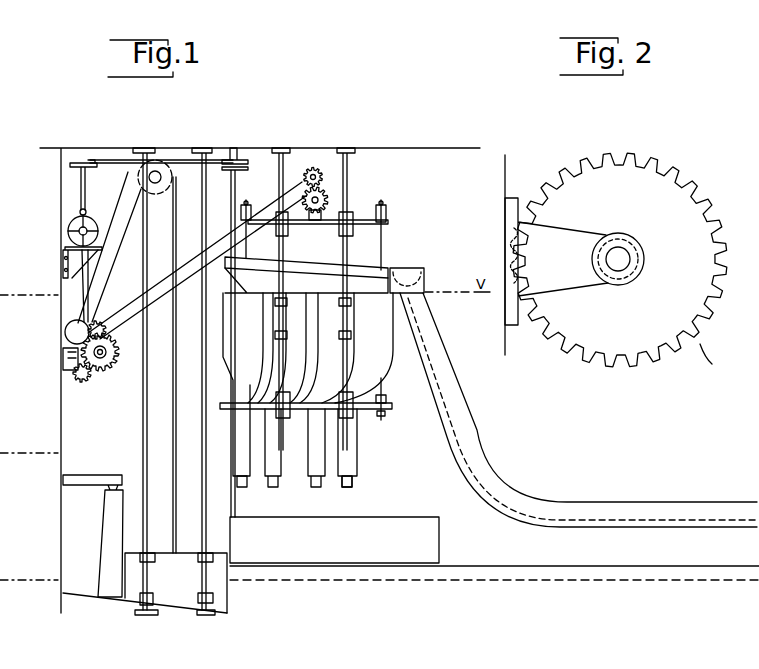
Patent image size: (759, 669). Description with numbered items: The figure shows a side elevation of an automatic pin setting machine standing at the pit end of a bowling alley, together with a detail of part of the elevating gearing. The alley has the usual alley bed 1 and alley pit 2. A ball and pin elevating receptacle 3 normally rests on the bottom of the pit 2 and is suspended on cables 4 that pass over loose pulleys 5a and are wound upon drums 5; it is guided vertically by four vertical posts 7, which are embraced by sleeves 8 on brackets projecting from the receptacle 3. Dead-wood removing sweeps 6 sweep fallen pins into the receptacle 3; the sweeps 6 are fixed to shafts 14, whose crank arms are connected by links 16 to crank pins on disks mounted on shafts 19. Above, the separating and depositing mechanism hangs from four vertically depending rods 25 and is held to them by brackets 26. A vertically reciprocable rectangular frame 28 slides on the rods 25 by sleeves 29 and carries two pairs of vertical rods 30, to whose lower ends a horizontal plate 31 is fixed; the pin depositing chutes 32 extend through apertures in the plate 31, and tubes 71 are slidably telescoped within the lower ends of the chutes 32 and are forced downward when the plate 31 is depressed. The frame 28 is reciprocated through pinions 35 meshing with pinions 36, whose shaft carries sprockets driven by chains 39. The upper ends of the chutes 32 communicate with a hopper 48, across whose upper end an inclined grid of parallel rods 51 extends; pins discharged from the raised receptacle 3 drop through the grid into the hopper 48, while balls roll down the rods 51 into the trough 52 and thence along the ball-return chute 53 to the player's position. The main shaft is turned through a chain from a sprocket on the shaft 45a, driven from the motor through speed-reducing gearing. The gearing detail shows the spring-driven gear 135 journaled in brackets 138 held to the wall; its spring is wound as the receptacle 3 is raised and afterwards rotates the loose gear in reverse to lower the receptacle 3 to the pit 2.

In FIG. 1, the alley bed 1 is at (584, 566).
In FIG. 1, the alley pit 2 is at (80, 588).
In FIG. 1, the ball and pin elevating receptacle 3 is at (182, 598).
In FIG. 1, the cables 4 is at (172, 440).
In FIG. 1, the drums 5 is at (70, 330).
In FIG. 1, the loose pulleys 5a is at (158, 168).
In FIG. 1, the dead-wood removing sweeps 6 is at (398, 538).
In FIG. 1, the vertical posts 7 is at (142, 406).
In FIG. 1, the sleeves 8 is at (149, 553).
In FIG. 1, the shafts 14 is at (237, 192).
In FIG. 1, the links 16 is at (182, 160).
In FIG. 1, the shafts 19 is at (86, 189).
In FIG. 1, the vertically depending rods 25 is at (284, 167).
In FIG. 1, the brackets 26 is at (288, 334).
In FIG. 1, the rectangular frame 28 is at (384, 218).
In FIG. 1, the sleeves 29 is at (353, 215).
In FIG. 1, the vertical rods 30 is at (250, 244).
In FIG. 1, the horizontal plate 31 is at (370, 410).
In FIG. 1, the pin depositing chutes 32 is at (385, 458).
In FIG. 1, the pinions 35 is at (323, 196).
In FIG. 1, the pinions 36 is at (318, 170).
In FIG. 1, the chains 39 is at (131, 300).
In FIG. 1, the shaft 45a is at (75, 232).
In FIG. 1, the hopper 48 is at (360, 283).
In FIG. 1, the grid rods 51 is at (363, 268).
In FIG. 1, the trough 52 is at (418, 277).
In FIG. 1, the ball-return chute 53 is at (470, 438).
In FIG. 1, the tubes 71 is at (353, 483).
In FIG. 2, the gear 135 is at (703, 240).
In FIG. 2, the brackets 138 is at (545, 250).